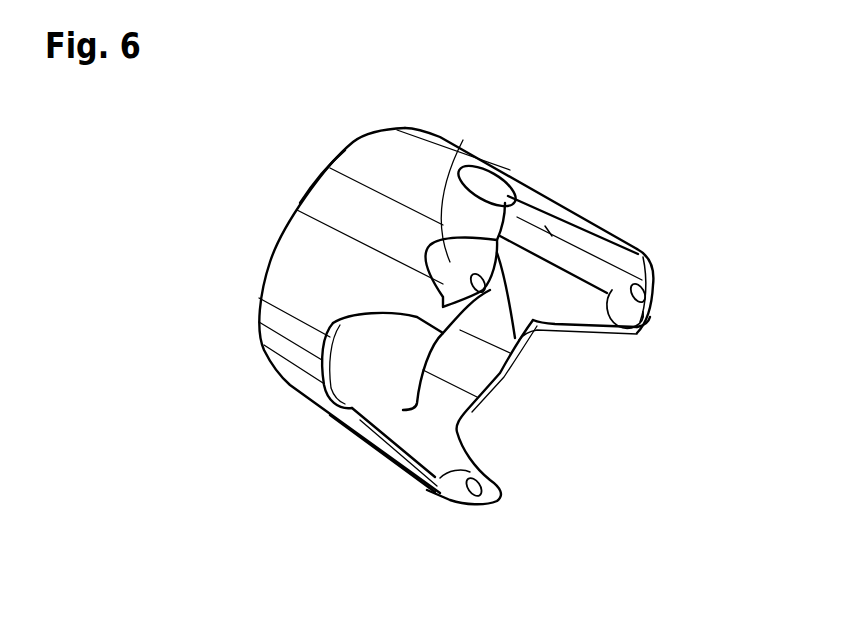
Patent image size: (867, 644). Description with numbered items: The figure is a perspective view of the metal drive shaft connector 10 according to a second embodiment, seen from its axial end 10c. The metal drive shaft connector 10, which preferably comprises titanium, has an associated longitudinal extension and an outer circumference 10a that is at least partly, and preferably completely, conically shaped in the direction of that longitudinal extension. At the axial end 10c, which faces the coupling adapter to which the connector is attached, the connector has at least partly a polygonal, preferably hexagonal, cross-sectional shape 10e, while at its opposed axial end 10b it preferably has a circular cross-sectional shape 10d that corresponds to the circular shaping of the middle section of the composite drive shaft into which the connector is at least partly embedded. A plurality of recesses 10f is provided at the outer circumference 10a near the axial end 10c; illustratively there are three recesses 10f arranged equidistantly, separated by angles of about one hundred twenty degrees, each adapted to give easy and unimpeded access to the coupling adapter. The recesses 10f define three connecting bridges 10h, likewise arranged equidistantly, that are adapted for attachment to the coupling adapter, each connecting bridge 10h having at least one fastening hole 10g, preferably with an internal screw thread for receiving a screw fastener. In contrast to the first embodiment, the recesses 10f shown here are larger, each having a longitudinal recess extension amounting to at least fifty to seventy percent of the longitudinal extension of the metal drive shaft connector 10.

The metal drive shaft connector 10 is at (460, 325).
The outer circumference 10a is at (320, 264).
The opposed axial end 10b is at (360, 143).
The axial end 10c is at (647, 276).
The circular cross-sectional shape 10d is at (268, 232).
The hexagonal cross-sectional shape 10e is at (652, 230).
The recesses 10f is at (484, 180).
The fastening hole 10g is at (649, 294).
The connecting bridges 10h is at (463, 140).